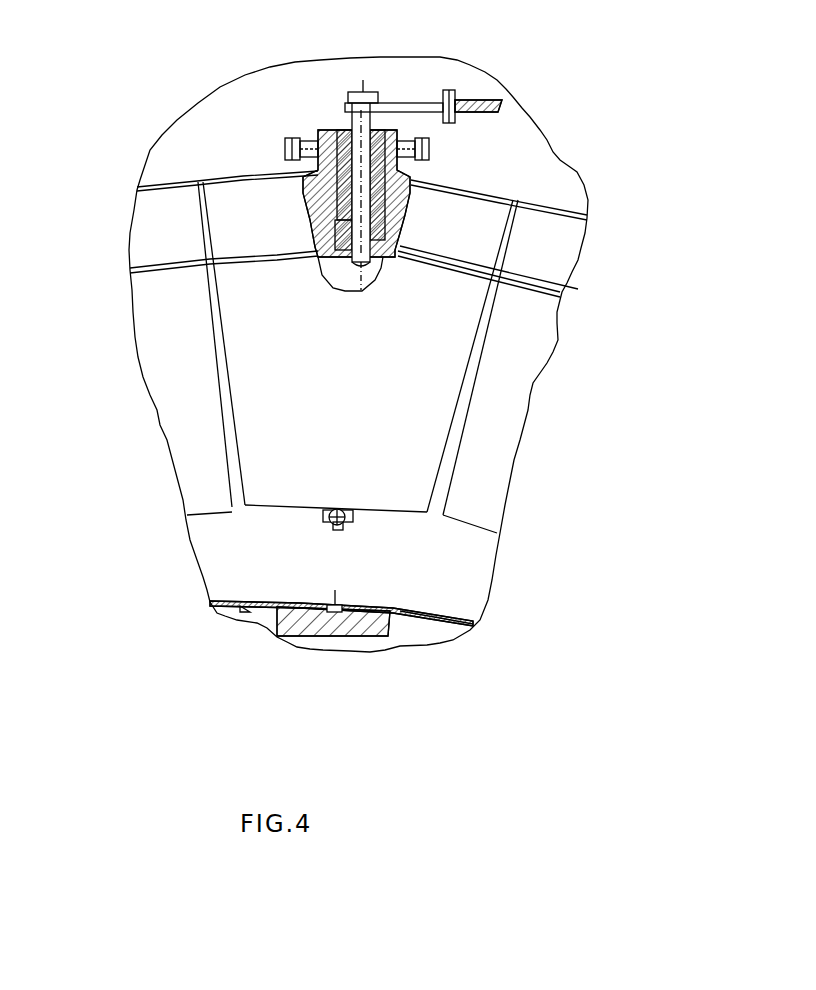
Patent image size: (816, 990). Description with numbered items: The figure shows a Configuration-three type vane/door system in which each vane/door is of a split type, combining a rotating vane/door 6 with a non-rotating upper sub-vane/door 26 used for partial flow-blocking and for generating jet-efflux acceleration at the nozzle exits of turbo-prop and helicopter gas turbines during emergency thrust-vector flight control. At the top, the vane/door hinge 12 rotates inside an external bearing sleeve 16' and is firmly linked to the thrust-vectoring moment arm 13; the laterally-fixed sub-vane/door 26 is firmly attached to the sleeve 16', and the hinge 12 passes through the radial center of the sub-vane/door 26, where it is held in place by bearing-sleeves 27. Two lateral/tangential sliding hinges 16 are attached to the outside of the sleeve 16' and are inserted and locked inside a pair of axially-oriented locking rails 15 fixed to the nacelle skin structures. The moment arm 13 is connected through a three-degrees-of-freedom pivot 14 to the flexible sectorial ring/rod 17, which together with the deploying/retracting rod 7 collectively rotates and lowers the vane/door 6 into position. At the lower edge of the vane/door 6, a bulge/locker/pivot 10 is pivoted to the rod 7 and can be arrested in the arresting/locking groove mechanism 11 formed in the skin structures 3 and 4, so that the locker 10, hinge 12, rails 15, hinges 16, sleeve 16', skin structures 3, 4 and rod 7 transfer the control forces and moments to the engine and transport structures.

The skin structure 3 is at (402, 612).
The skin structure 4 is at (412, 615).
The vane/door 6 is at (181, 446).
The rod 7 is at (323, 523).
The bulge/locker/pivot 10 is at (323, 517).
The arresting/locking groove mechanism 11 is at (280, 617).
The vane/door hinge 12 is at (352, 92).
The thrust-vectoring moment arm 13 is at (404, 104).
The three-degrees-of-freedom pivot 14 is at (455, 95).
The locking rails 15 is at (288, 150).
The sliding hinges 16 is at (418, 137).
The bearing sleeve 16' is at (329, 150).
The TVFC/TR sectorial ring/rod 17 is at (495, 100).
The upper sub-vane/door 26 is at (232, 233).
The bearing-sleeves 27 is at (413, 180).